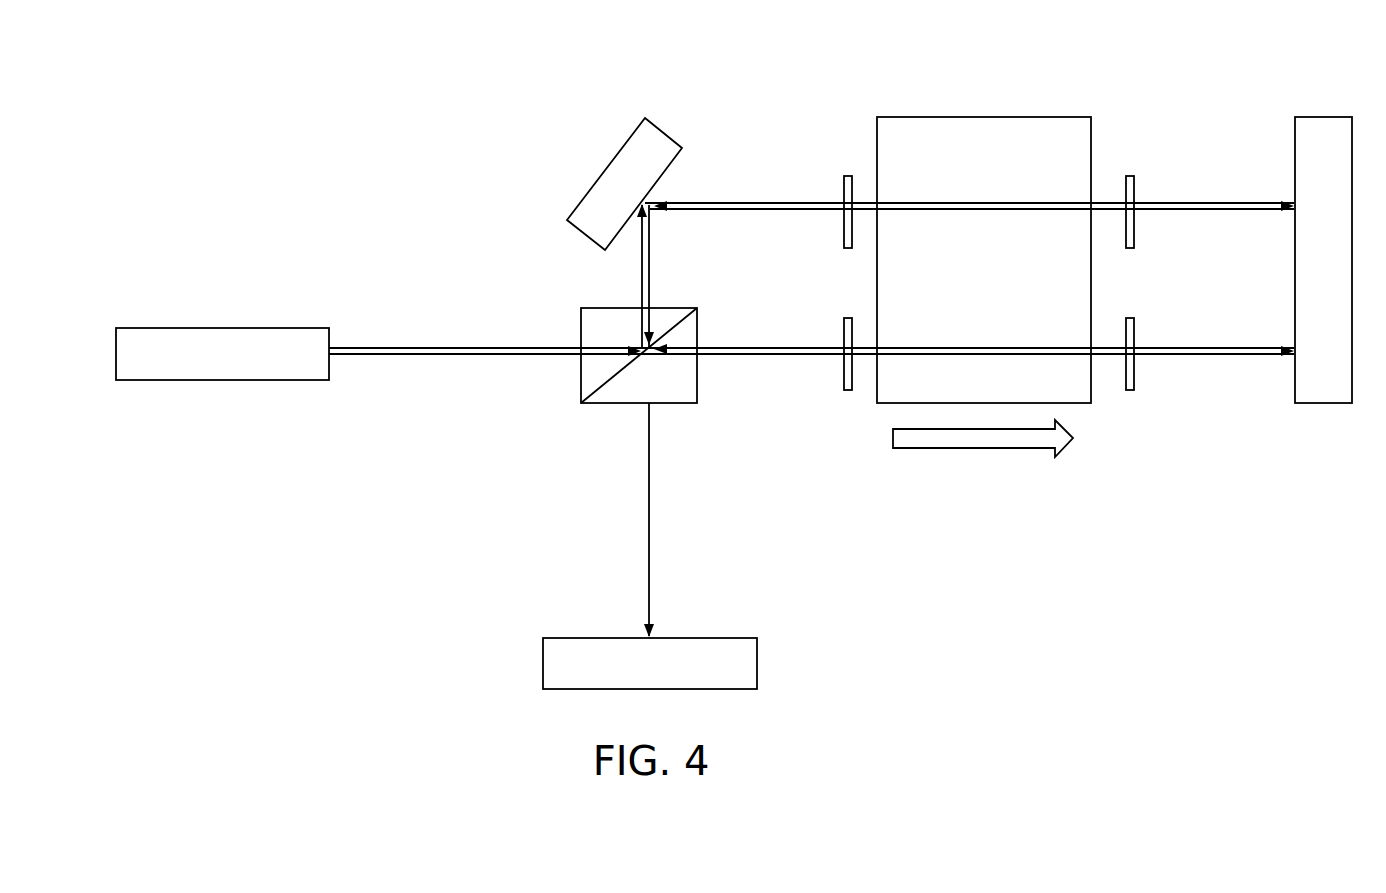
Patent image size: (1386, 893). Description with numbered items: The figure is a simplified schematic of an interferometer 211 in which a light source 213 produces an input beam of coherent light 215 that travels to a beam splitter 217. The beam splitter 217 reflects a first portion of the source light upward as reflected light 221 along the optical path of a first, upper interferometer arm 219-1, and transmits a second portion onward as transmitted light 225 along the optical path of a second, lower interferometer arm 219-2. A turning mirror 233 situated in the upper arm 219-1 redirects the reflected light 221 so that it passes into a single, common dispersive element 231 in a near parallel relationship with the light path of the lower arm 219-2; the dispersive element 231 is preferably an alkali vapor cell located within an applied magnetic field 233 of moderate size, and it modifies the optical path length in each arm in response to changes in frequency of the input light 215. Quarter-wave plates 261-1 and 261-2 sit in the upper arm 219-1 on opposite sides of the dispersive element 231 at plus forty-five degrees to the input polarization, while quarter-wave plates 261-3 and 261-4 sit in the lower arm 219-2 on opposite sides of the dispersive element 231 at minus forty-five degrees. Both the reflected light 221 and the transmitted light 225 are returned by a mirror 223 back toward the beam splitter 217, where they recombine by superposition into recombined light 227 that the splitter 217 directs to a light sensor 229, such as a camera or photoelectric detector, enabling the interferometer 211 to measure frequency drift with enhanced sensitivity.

The interferometer 211 is at (266, 618).
The light source 213 is at (222, 354).
The input beam of coherent light 215 is at (432, 357).
The beam splitter 217 is at (618, 405).
The first interferometer arm 219-1 is at (1195, 82).
The second interferometer arm 219-2 is at (1248, 490).
The reflected light 221 is at (640, 268).
The mirror 223 is at (1323, 260).
The transmitted light 225 is at (770, 356).
The recombined light 227 is at (648, 567).
The light sensor 229 is at (650, 663).
The dispersive element 231 is at (995, 116).
The turning mirror / applied magnetic field 233 is at (611, 162).
The quarter-wave plate 261-1 is at (844, 192).
The quarter-wave plate 261-2 is at (1135, 186).
The quarter-wave plate 261-3 is at (845, 398).
The quarter-wave plate 261-4 is at (1135, 392).